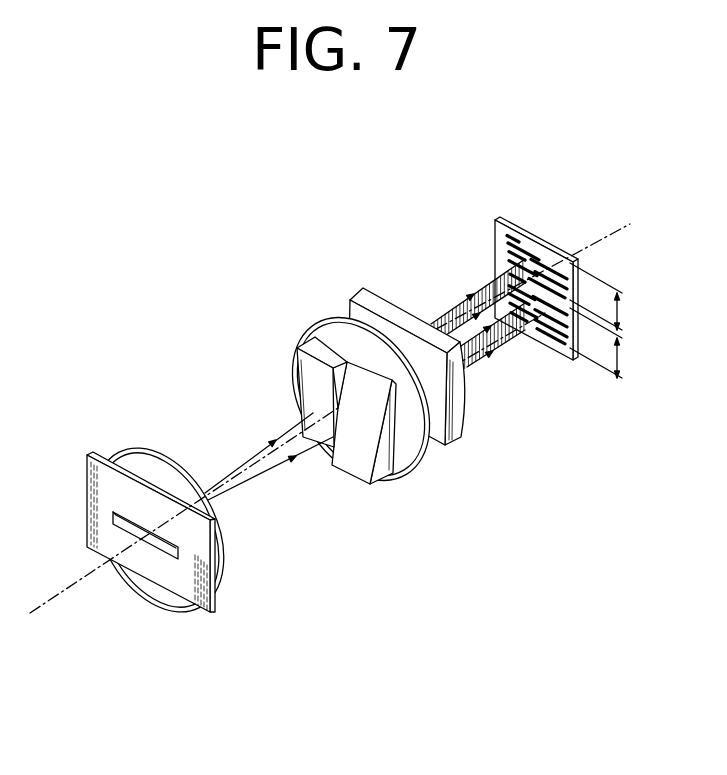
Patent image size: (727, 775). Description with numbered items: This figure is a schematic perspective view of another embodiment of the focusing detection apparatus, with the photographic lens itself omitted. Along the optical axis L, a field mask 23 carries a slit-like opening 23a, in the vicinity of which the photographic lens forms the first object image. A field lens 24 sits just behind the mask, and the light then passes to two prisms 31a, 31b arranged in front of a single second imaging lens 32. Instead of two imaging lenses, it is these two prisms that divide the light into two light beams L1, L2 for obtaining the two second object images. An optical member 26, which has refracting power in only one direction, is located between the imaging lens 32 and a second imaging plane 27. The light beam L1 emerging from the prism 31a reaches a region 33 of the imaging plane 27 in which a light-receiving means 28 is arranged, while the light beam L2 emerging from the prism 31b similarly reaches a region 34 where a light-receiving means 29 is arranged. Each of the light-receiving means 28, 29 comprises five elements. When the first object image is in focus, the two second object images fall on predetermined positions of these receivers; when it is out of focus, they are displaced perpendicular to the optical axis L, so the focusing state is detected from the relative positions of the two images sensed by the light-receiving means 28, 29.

The field mask 23 is at (150, 563).
The slit-like opening 23a is at (182, 549).
The field lens 24 is at (156, 453).
The optical member 26 is at (380, 303).
The second imaging plane 27 is at (538, 235).
The light-receiving means 28 is at (500, 243).
The light-receiving means 29 is at (566, 340).
The prism 31a is at (308, 380).
The prism 31b is at (354, 467).
The second imaging lens 32 is at (333, 319).
The region 33 is at (610, 296).
The region 34 is at (610, 343).
The optical axis L is at (77, 585).
The light beam L1 is at (467, 302).
The light beam L2 is at (470, 362).